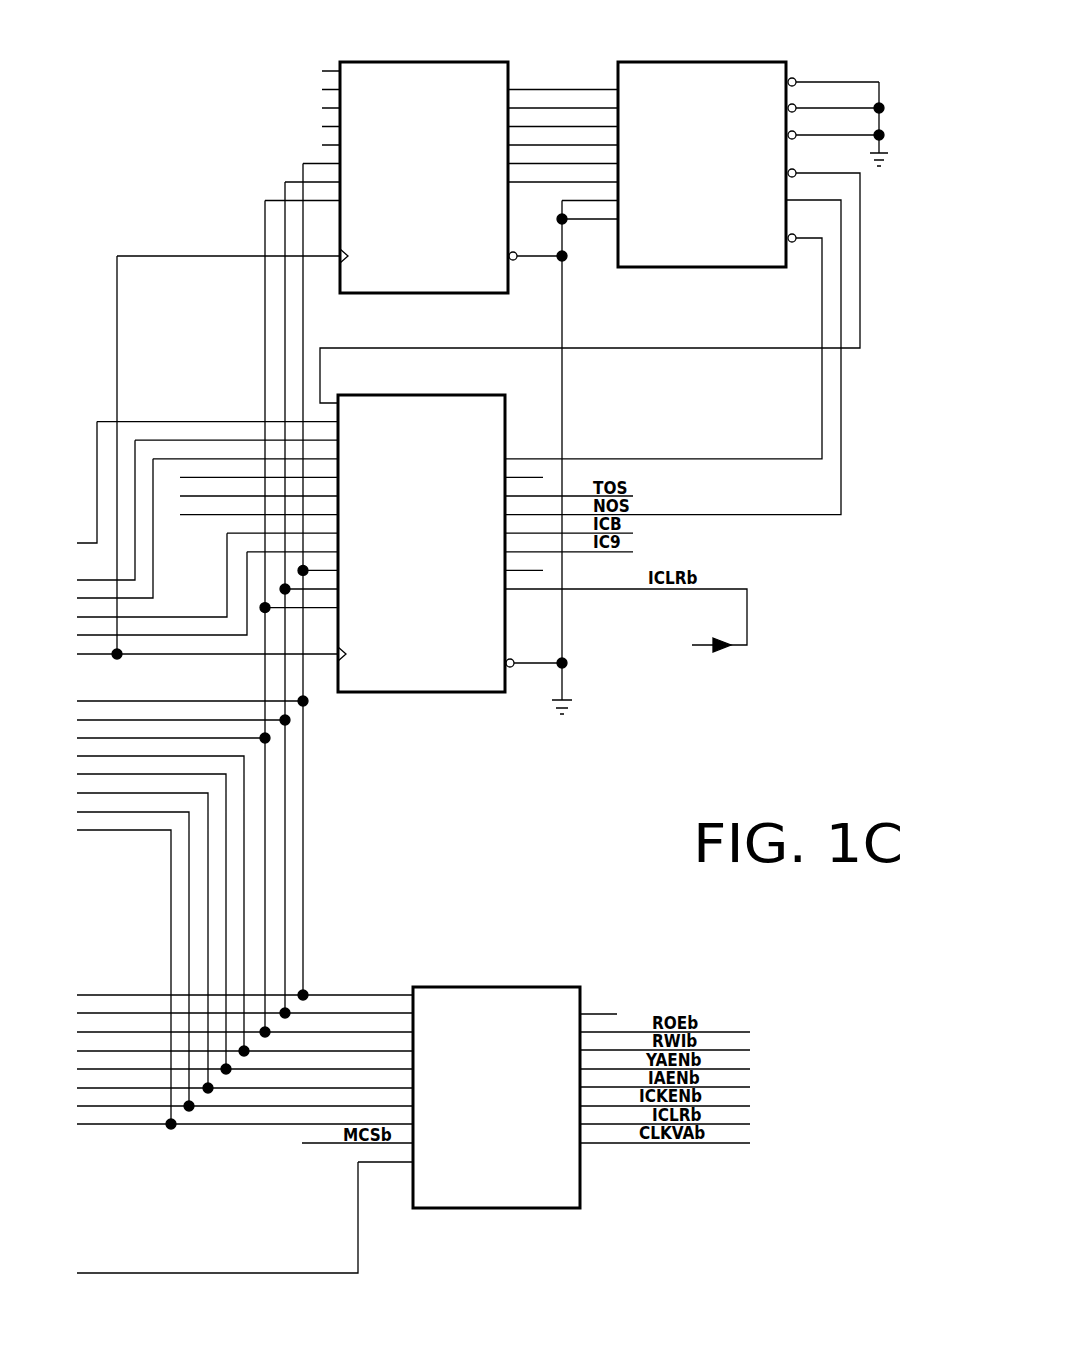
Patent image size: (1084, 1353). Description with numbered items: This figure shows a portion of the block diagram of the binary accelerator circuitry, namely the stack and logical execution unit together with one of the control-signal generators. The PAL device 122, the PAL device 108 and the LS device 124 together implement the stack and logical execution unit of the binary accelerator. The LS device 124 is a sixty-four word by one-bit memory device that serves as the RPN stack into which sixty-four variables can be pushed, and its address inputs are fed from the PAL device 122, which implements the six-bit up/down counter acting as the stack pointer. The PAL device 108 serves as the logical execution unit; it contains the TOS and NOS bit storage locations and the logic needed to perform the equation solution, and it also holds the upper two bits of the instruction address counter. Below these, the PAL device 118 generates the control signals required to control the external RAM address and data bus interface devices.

The PAL device 122 is at (413, 62).
The LS device 124 is at (708, 62).
The PAL device 108 is at (418, 692).
The PAL device 118 is at (515, 987).